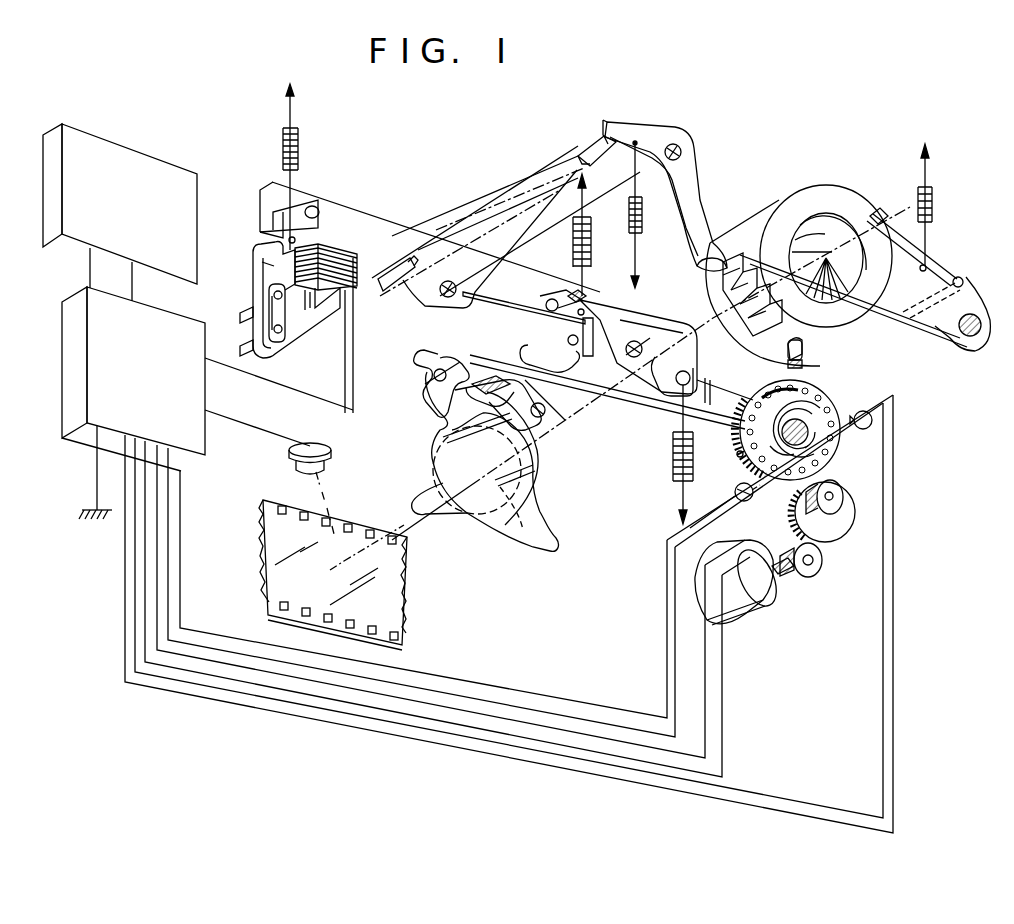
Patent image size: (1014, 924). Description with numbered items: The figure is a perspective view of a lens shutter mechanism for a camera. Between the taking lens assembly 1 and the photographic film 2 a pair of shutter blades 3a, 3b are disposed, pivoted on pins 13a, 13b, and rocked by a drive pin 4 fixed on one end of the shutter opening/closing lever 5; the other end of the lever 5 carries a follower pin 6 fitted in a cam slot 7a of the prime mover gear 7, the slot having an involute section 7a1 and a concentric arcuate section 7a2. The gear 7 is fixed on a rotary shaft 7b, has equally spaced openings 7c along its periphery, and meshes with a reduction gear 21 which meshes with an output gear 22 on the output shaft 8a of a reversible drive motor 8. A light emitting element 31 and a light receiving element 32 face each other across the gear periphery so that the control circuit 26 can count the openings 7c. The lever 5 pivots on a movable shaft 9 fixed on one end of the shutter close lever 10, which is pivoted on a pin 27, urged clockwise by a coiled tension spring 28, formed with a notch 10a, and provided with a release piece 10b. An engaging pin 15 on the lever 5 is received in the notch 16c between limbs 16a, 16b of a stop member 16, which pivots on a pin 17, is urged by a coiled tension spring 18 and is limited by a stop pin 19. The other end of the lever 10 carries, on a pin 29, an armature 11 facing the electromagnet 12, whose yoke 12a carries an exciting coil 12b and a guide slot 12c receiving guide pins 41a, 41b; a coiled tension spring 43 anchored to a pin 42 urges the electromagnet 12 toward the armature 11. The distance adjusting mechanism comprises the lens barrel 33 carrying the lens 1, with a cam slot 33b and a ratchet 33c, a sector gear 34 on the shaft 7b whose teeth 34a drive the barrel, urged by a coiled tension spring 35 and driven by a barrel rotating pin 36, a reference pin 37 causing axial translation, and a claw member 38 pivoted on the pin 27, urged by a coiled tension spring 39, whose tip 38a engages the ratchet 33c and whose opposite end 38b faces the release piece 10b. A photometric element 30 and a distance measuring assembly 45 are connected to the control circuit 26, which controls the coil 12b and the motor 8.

The taking lens assembly 1 is at (810, 230).
The photographic film 2 is at (267, 551).
The shutter blade 3a is at (546, 548).
The shutter blade 3b is at (436, 516).
The drive pin 4 is at (472, 388).
The shutter opening/closing lever 5 is at (632, 389).
The follower pin 6 is at (800, 388).
The prime mover gear 7 is at (820, 416).
The cam slot 7a is at (750, 408).
The involute section 7a1 is at (770, 448).
The concentric arcuate section 7a2 is at (824, 444).
The rotary shaft 7b is at (940, 332).
The openings 7c is at (758, 462).
The reversible drive motor 8 is at (780, 608).
The output shaft 8a is at (772, 566).
The movable shaft 9 is at (666, 394).
The shutter close lever 10 is at (495, 278).
The notch 10a is at (516, 270).
The release piece 10b is at (388, 266).
The armature 11 is at (340, 226).
The electromagnet 12 is at (304, 322).
The yoke 12a is at (266, 266).
The exciting coil 12b is at (358, 282).
The guide slot 12c is at (271, 305).
The pin 13a is at (558, 424).
The pin 13b is at (442, 362).
The engaging pin 15 is at (556, 328).
The stop member 16 is at (628, 326).
The limb 16a is at (542, 410).
The limb 16b is at (556, 306).
The notch 16c is at (583, 306).
The pin 17 is at (646, 340).
The coiled tension spring 18 is at (592, 224).
The stop pin 19 is at (570, 292).
The reduction gear 21 is at (825, 534).
The output gear 22 is at (810, 570).
The control circuit 26 is at (72, 380).
The pin 27 is at (455, 275).
The coiled tension spring 28 is at (673, 454).
The pin 29 is at (310, 207).
The photometric element 30 is at (295, 464).
The light emitting element 31 is at (874, 422).
The light receiving element 32 is at (750, 498).
The lens barrel 33 is at (754, 215).
The cam slot 33b is at (800, 352).
The ratchet 33c is at (746, 268).
The sector gear 34 is at (928, 266).
The teeth 34a is at (874, 214).
The coiled tension spring 35 is at (935, 204).
The barrel rotating pin 36 is at (962, 284).
The reference pin 37 is at (788, 356).
The claw member 38 is at (686, 154).
The tip 38a is at (702, 264).
The opposite end 38b is at (606, 125).
The coiled tension spring 39 is at (642, 214).
The guide pin 41a is at (278, 291).
The guide pin 41b is at (276, 328).
The pin 42 is at (288, 236).
The coiled tension spring 43 is at (283, 148).
The distance measuring assembly 45 is at (110, 148).